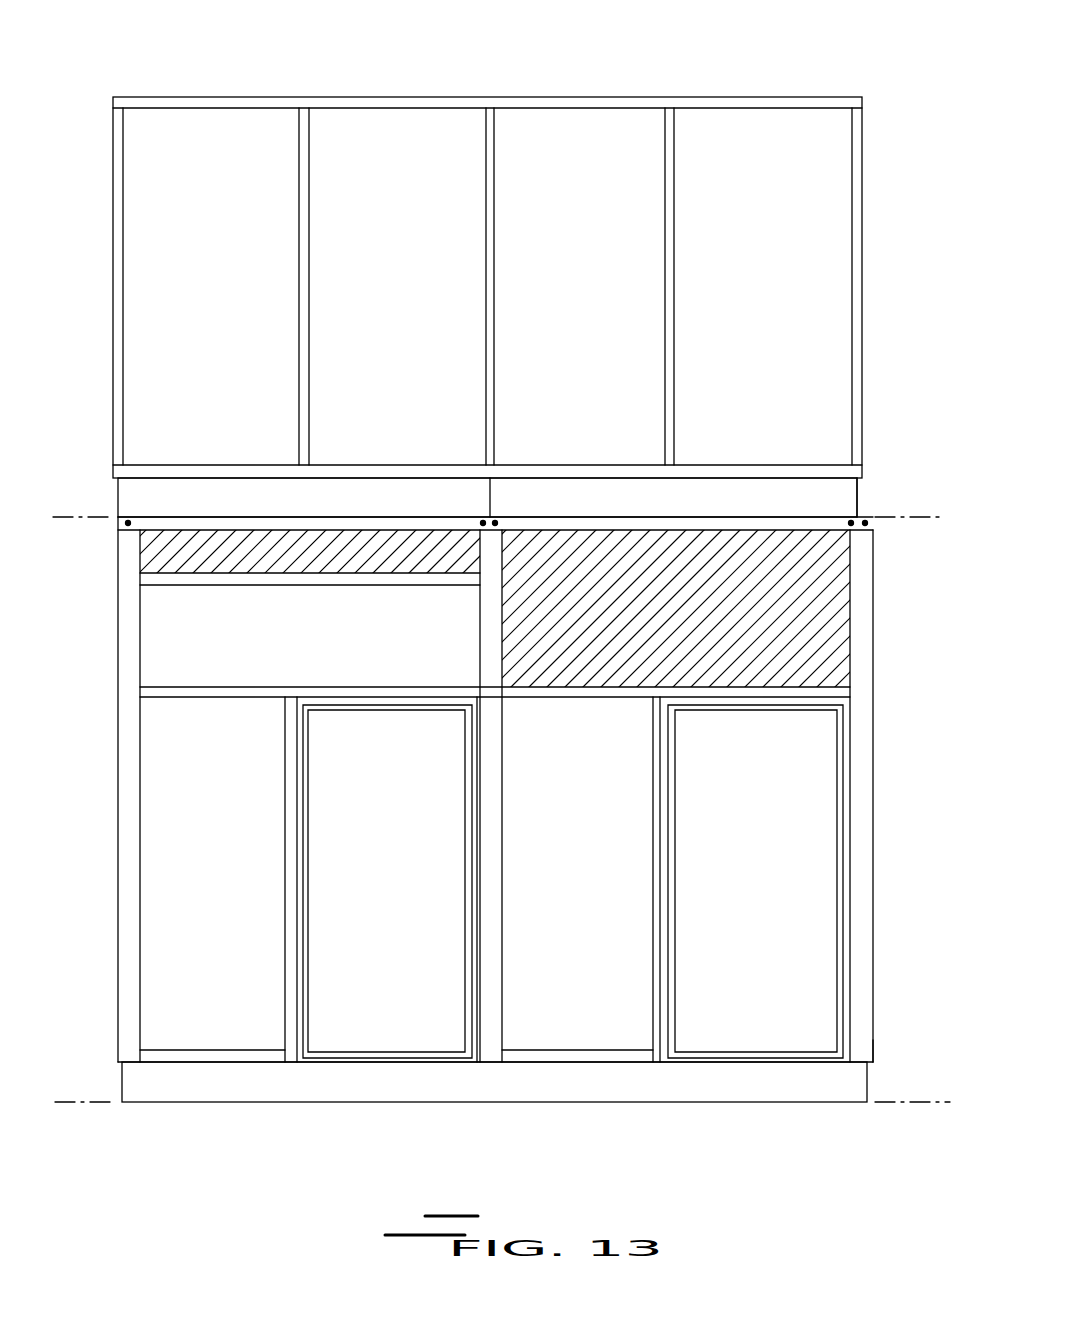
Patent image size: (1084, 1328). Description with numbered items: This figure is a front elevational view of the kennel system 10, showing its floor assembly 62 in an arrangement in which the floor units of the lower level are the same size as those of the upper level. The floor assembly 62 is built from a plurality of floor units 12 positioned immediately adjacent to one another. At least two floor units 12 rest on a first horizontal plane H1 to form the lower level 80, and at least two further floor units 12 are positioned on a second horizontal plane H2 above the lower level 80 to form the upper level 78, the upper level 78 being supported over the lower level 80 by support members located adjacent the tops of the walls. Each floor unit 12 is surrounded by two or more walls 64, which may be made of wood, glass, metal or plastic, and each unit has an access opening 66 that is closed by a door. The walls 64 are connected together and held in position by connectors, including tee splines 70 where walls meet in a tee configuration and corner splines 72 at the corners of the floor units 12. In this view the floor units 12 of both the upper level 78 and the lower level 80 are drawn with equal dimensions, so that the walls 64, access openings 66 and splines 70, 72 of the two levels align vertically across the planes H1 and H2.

The kennel system 10 is at (613, 82).
The floor assembly 62 is at (737, 82).
The walls 64 is at (190, 257).
The floor unit 12 is at (168, 490).
The upper level 78 is at (843, 505).
The access opening 66 is at (800, 793).
The tee spline 70 is at (862, 890).
The corner spline 72 is at (127, 937).
The lower level 80 is at (868, 1080).
The first horizontal plane H1 is at (95, 1102).
The second horizontal plane H2 is at (95, 517).